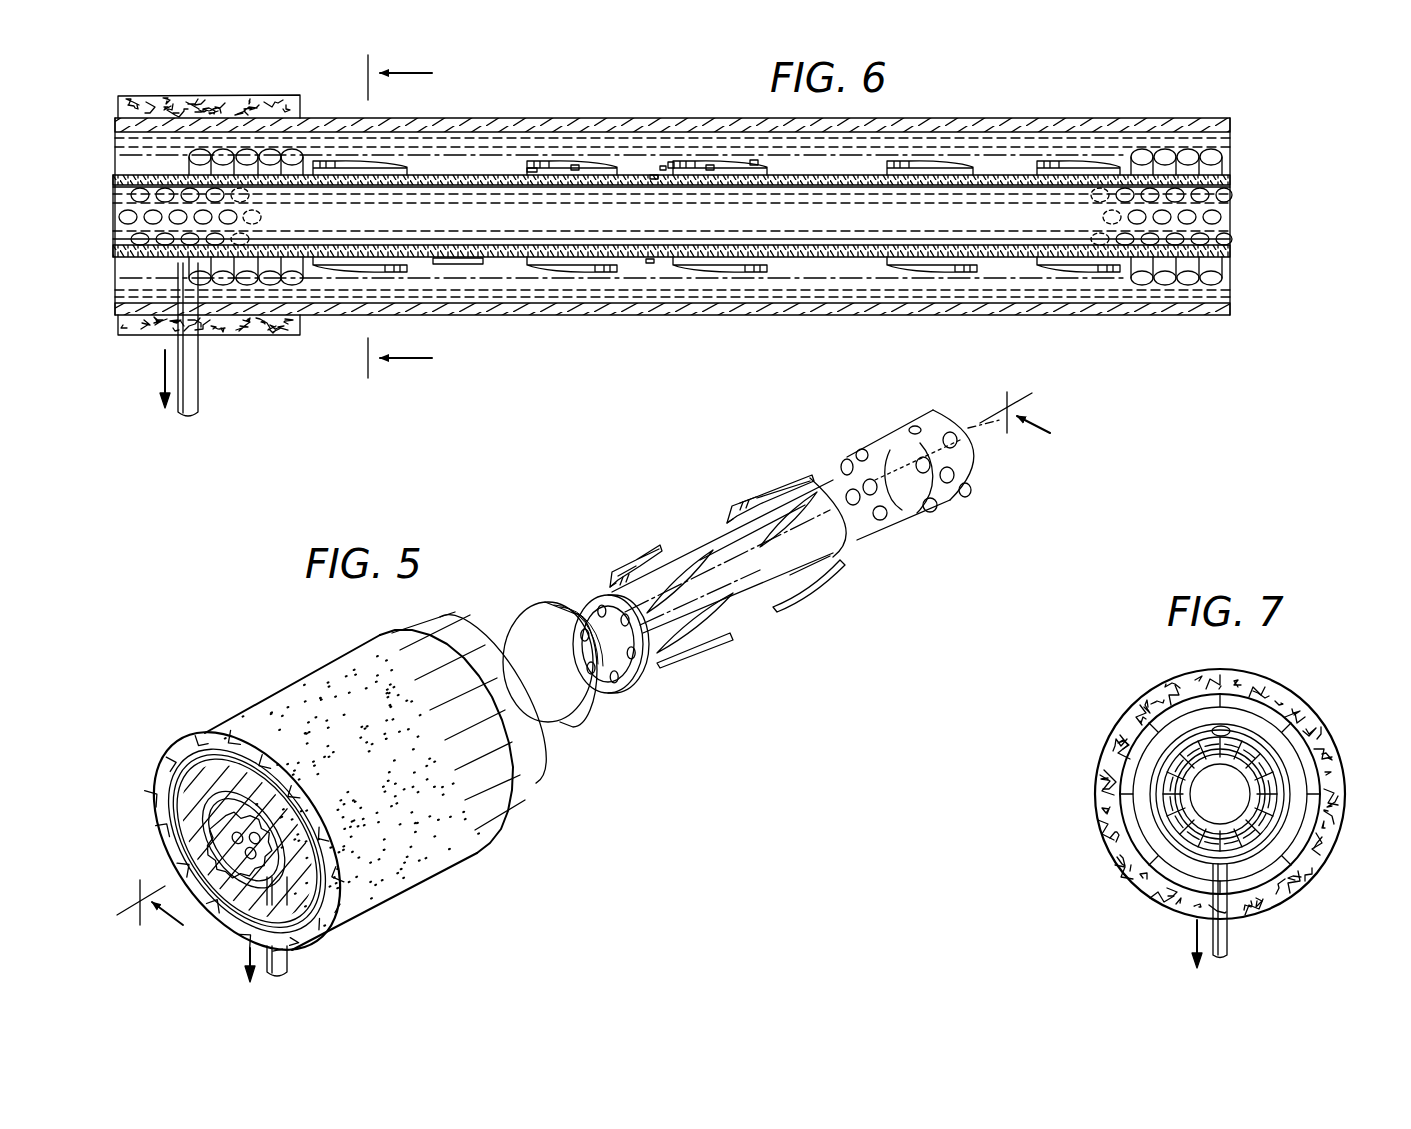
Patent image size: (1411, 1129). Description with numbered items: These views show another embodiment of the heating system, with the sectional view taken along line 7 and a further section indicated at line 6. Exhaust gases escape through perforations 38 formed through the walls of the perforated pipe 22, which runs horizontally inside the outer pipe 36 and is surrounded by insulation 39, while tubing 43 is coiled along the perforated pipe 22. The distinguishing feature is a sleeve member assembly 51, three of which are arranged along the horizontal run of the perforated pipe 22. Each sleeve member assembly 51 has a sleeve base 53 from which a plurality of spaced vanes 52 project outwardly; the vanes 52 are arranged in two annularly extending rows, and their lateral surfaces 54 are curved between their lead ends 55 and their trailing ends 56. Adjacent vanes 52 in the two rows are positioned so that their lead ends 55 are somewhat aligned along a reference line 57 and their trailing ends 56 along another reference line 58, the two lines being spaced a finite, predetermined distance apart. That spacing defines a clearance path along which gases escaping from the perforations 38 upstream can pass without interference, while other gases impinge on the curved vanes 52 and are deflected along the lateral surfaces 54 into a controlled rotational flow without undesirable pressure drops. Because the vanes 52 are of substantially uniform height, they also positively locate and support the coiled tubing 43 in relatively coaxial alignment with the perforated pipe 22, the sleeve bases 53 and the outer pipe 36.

In FIG. 6, the perforated pipe 22 is at (747, 184).
In FIG. 5, the perforated pipe 22 is at (215, 835).
In FIG. 7, the perforated pipe 22 is at (1266, 783).
In FIG. 6, the outer pipe 36 is at (577, 118).
In FIG. 5, the outer pipe 36 is at (540, 768).
In FIG. 7, the outer pipe 36 is at (1160, 690).
In FIG. 6, the perforations 38 is at (482, 258).
In FIG. 5, the perforations 38 is at (222, 820).
In FIG. 7, the perforations 38 is at (1232, 764).
In FIG. 6, the insulation 39 is at (262, 332).
In FIG. 5, the insulation 39 is at (450, 840).
In FIG. 7, the insulation 39 is at (1270, 700).
In FIG. 6, the tubing 43 is at (199, 405).
In FIG. 5, the tubing 43 is at (610, 700).
In FIG. 7, the tubing 43 is at (1267, 753).
In FIG. 6, the sleeve member assembly 51 is at (663, 165).
In FIG. 5, the sleeve member assembly 51 is at (825, 595).
In FIG. 6, the vanes 52 is at (733, 152).
In FIG. 5, the vanes 52 is at (755, 481).
In FIG. 7, the vanes 52 is at (1160, 785).
In FIG. 6, the sleeve base 53 is at (655, 178).
In FIG. 5, the sleeve base 53 is at (280, 792).
In FIG. 7, the sleeve base 53 is at (1170, 820).
In FIG. 6, the lateral surfaces 54 is at (575, 168).
In FIG. 5, the lateral surfaces 54 is at (745, 503).
In FIG. 6, the lead ends 55 is at (757, 163).
In FIG. 5, the lead ends 55 is at (777, 483).
In FIG. 6, the trailing ends 56 is at (672, 165).
In FIG. 5, the trailing ends 56 is at (703, 543).
In FIG. 5, the reference line 57 is at (677, 553).
In FIG. 5, the reference line 58 is at (790, 485).
In FIG. 5, the section line 6 is at (593, 675).
In FIG. 6, the section line 7 is at (417, 217).